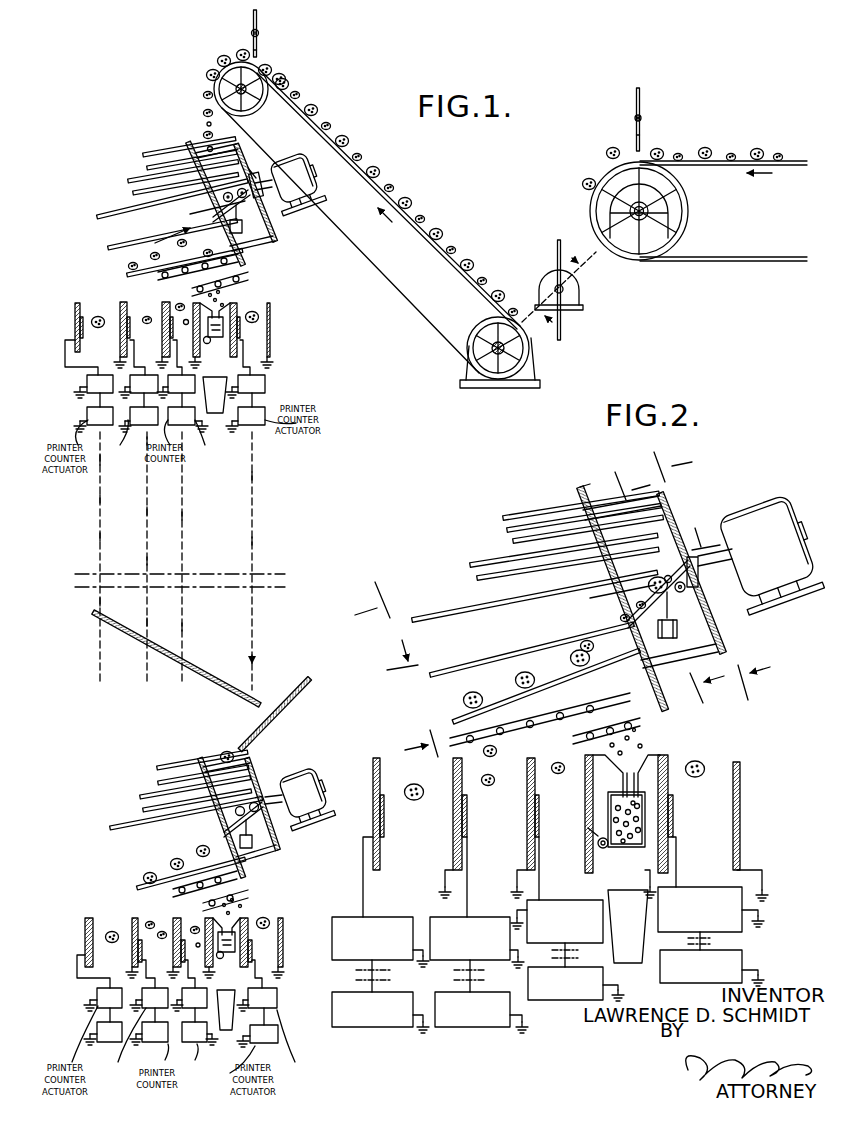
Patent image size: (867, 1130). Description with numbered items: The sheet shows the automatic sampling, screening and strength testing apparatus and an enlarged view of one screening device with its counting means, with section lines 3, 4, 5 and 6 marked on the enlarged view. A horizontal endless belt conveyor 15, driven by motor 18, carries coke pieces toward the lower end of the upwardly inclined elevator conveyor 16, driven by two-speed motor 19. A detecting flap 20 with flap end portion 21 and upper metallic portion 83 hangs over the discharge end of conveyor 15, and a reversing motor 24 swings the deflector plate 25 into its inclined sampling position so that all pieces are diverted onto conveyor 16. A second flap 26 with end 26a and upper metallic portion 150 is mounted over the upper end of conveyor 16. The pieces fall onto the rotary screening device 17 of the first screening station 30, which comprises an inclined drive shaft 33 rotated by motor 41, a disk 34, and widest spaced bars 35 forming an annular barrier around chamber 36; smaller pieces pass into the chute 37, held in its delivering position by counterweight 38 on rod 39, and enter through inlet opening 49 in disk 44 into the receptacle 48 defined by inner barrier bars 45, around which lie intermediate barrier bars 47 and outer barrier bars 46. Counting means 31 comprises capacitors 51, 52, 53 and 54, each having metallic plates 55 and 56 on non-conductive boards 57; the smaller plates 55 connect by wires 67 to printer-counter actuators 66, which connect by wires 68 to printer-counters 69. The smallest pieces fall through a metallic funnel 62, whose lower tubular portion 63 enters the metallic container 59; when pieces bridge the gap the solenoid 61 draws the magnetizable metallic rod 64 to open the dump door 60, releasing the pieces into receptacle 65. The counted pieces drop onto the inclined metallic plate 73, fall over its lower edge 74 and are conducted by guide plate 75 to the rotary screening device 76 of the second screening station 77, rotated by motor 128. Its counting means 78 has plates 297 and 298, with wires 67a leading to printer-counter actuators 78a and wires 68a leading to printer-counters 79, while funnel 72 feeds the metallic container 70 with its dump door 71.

In FIG. 1, the horizontal endless belt conveyor 15 is at (717, 166).
In FIG. 1, the upwardly inclined endless belt conveyor 16 is at (445, 258).
In FIG. 1, the rotary screening device 17 is at (183, 138).
In FIG. 2, the rotary screening device 17 is at (577, 484).
In FIG. 1, the motor 18 is at (622, 204).
In FIG. 1, the two-speed motor 19 is at (472, 372).
In FIG. 1, the detecting flap 20 is at (634, 120).
In FIG. 1, the flap end portion 21 is at (641, 135).
In FIG. 1, the reversing motor 24 is at (547, 290).
In FIG. 1, the deflector plate 25 is at (561, 330).
In FIG. 1, the flap 26 is at (258, 33).
In FIG. 1, the flap end 26a is at (257, 50).
In FIG. 1, the first screening station 30 is at (84, 251).
In FIG. 1, the counting means 31 is at (70, 315).
In FIG. 1, the drive shaft 33 is at (262, 197).
In FIG. 2, the drive shaft 33 is at (727, 558).
In FIG. 1, the disk 34 is at (238, 153).
In FIG. 2, the disk 34 is at (718, 636).
In FIG. 1, the widest spaced apart parallel bars 35 is at (240, 183).
In FIG. 2, the widest spaced apart parallel bars 35 is at (658, 545).
In FIG. 1, the chamber 36 is at (250, 166).
In FIG. 2, the chamber 36 is at (667, 558).
In FIG. 1, the chute 37 is at (262, 227).
In FIG. 2, the chute 37 is at (686, 590).
In FIG. 1, the counterweight 38 is at (253, 239).
In FIG. 2, the counterweight 38 is at (678, 634).
In FIG. 2, the rod 39 is at (678, 597).
In FIG. 1, the motor 41 is at (318, 184).
In FIG. 2, the motor 41 is at (755, 513).
In FIG. 1, the disk 44 is at (237, 262).
In FIG. 2, the disk 44 is at (590, 488).
In FIG. 1, the inner barrier bars 45 is at (116, 212).
In FIG. 2, the inner barrier bars 45 is at (462, 612).
In FIG. 1, the outer barrier bars 46 is at (143, 153).
In FIG. 2, the outer barrier bars 46 is at (513, 541).
In FIG. 1, the intermediate barrier bars 47 is at (128, 188).
In FIG. 2, the intermediate barrier bars 47 is at (477, 579).
In FIG. 1, the receptacle 48 is at (175, 248).
In FIG. 2, the receptacle 48 is at (613, 638).
In FIG. 1, the inlet opening 49 is at (198, 210).
In FIG. 2, the inlet opening 49 is at (617, 592).
In FIG. 1, the capacitor 51 is at (60, 333).
In FIG. 2, the capacitor 51 is at (406, 746).
In FIG. 1, the capacitor 52 is at (157, 346).
In FIG. 2, the capacitor 52 is at (519, 776).
In FIG. 1, the capacitor 53 is at (196, 344).
In FIG. 2, the capacitor 53 is at (581, 763).
In FIG. 1, the capacitor 54 is at (311, 324).
In FIG. 2, the capacitor 54 is at (784, 776).
In FIG. 1, the metallic plate 55 is at (83, 320).
In FIG. 2, the metallic plate 55 is at (387, 813).
In FIG. 1, the metallic plate 56 is at (120, 305).
In FIG. 2, the metallic plate 56 is at (453, 828).
In FIG. 1, the non-conductive board 57 is at (78, 302).
In FIG. 2, the non-conductive board 57 is at (377, 760).
In FIG. 1, the metallic container 59 is at (211, 340).
In FIG. 2, the metallic container 59 is at (593, 797).
In FIG. 1, the dump door 60 is at (209, 344).
In FIG. 2, the dump door 60 is at (643, 847).
In FIG. 2, the solenoid 61 is at (597, 831).
In FIG. 1, the metallic funnel 62 is at (237, 307).
In FIG. 2, the metallic funnel 62 is at (647, 754).
In FIG. 2, the lower tubular portion 63 is at (641, 785).
In FIG. 2, the magnetizable metallic rod 64 is at (606, 848).
In FIG. 1, the receptacle 65 is at (222, 398).
In FIG. 2, the receptacle 65 is at (635, 933).
In FIG. 1, the printer-counter actuator 66 is at (107, 390).
In FIG. 2, the printer-counter actuator 66 is at (396, 917).
In FIG. 1, the wire 67 is at (65, 357).
In FIG. 2, the wire 67 is at (363, 857).
In FIG. 1, the wire 68 is at (271, 416).
In FIG. 2, the wire 68 is at (356, 972).
In FIG. 1, the printer-counter 69 is at (107, 422).
In FIG. 2, the printer-counter 69 is at (370, 1027).
In FIG. 1, the metallic container 70 is at (226, 991).
In FIG. 1, the dump door 71 is at (228, 953).
In FIG. 1, the metallic funnel 72 is at (240, 910).
In FIG. 1, the inclined metallic plate 73 is at (170, 656).
In FIG. 1, the lower edge 74 is at (263, 702).
In FIG. 1, the guide plate 75 is at (285, 706).
In FIG. 1, the rotary screening device 76 is at (198, 755).
In FIG. 1, the second screening station 77 is at (72, 861).
In FIG. 1, the counting means 78 is at (81, 940).
In FIG. 1, the printer-counter actuator 78a is at (117, 1004).
In FIG. 1, the printer-counter 79 is at (117, 1038).
In FIG. 1, the upper metallic portion 83 is at (636, 94).
In FIG. 1, the motor 128 is at (297, 772).
In FIG. 1, the upper metallic portion 150 is at (252, 18).
In FIG. 1, the plate 297 is at (100, 917).
In FIG. 1, the plate 298 is at (134, 918).
In FIG. 1, the wire 67a is at (77, 967).
In FIG. 1, the wire 68a is at (112, 990).
In FIG. 2, the section line 3- 3 is at (396, 677).
In FIG. 2, the section line 4- 4 is at (712, 572).
In FIG. 2, the section line 5- 5 is at (669, 585).
In FIG. 2, the section line 6- 6 is at (551, 599).